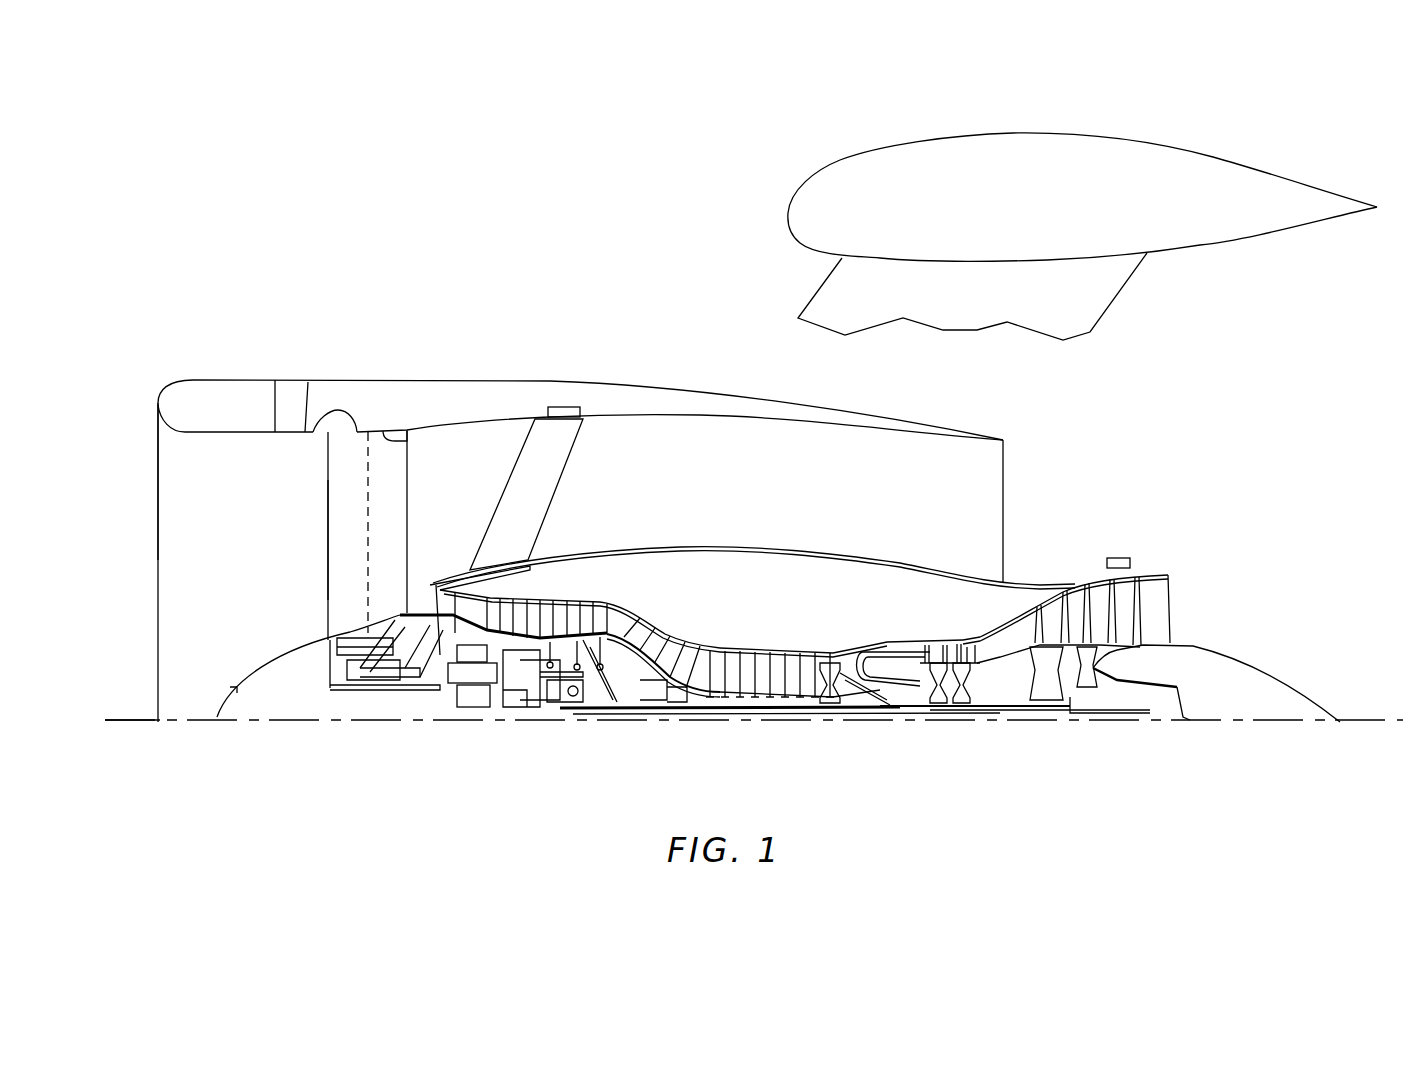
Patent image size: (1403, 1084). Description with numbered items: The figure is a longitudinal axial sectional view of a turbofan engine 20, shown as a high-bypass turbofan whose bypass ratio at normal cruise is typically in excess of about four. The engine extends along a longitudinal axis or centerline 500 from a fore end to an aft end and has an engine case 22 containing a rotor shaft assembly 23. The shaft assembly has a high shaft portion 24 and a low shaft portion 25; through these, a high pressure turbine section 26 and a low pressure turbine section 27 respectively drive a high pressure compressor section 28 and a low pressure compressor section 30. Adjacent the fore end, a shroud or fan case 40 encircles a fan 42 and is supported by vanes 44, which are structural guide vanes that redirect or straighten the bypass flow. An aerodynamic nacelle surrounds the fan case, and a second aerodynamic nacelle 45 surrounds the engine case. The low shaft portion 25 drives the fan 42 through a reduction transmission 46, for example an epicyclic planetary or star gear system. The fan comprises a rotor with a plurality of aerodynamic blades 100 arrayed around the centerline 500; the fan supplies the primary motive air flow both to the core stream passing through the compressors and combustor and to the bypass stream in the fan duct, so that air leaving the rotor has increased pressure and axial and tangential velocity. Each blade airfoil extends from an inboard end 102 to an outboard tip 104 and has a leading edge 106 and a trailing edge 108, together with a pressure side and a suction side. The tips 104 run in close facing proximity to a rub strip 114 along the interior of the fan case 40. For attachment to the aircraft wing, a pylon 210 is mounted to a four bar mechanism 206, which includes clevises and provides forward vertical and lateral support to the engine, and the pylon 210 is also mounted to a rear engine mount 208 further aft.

The turbofan engine 20 is at (523, 268).
The shroud (fan case) 40 is at (392, 410).
The four bar mechanism 206 is at (557, 404).
The vanes 44 is at (545, 466).
The outboard tips 104 is at (313, 432).
The rub strip 114 is at (400, 440).
The aerodynamic blades 100 is at (340, 486).
The leading edge 106 is at (328, 537).
The trailing edge 108 is at (407, 521).
The fan 42 is at (313, 573).
The inboard ends 102 is at (347, 653).
The reduction transmission 46 is at (475, 700).
The aerodynamic nacelle 45 is at (896, 555).
The low pressure compressor (LPC) section 30 is at (600, 597).
The high pressure compressor (HPC) section 28 is at (762, 650).
The engine case 22 is at (808, 630).
The high pressure turbine (HPT) section 26 is at (960, 640).
The low pressure turbine (LPT) section 27 is at (1077, 583).
The rear engine mount 208 is at (1120, 557).
The high shaft portion 24 is at (889, 705).
The rotor shaft assembly 23 is at (718, 708).
The low shaft portion 25 is at (848, 710).
The longitudinal axis (centerline) 500 is at (142, 722).
The pylon 210 is at (1108, 327).